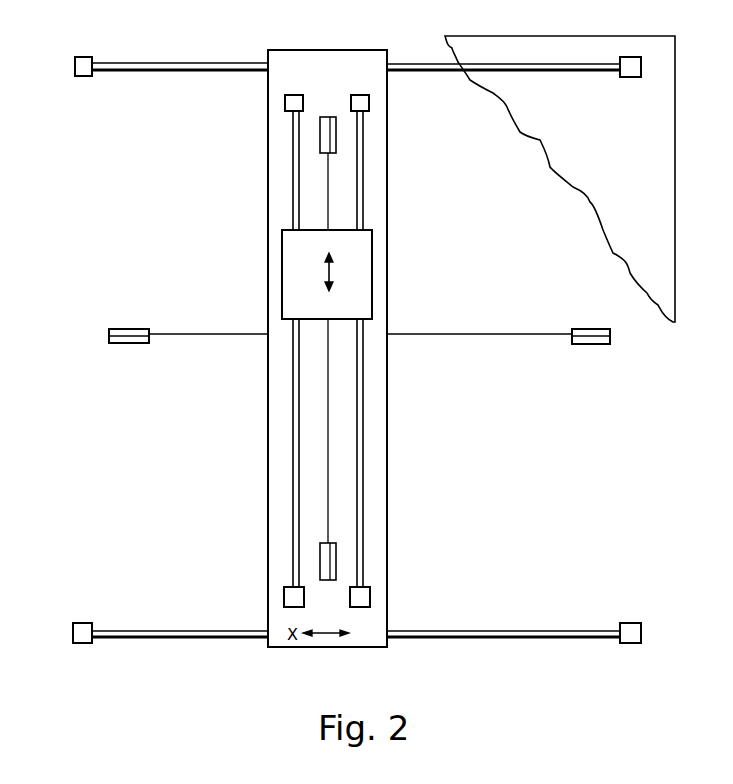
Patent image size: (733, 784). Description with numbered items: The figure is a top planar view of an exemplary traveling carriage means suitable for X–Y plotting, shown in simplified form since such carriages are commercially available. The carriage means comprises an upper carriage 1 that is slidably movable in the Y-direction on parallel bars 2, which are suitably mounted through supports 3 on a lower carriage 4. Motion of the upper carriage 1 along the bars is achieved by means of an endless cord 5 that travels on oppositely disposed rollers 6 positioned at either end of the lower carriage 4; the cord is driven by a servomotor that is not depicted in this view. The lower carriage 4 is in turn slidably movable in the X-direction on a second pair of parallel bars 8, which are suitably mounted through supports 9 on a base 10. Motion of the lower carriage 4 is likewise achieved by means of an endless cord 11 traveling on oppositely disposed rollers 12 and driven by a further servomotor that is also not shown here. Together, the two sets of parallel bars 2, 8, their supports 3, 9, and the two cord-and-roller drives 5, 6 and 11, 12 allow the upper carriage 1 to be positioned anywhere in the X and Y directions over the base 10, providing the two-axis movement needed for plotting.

The upper carriage 1 is at (360, 292).
The parallel bars 2 is at (361, 216).
The supports 3 is at (363, 103).
The lower carriage 4 is at (380, 168).
The endless cord 5 is at (325, 192).
The rollers 6 is at (320, 130).
The parallel bars 8 is at (173, 66).
The supports 9 is at (81, 74).
The base 10 is at (668, 138).
The endless cord 11 is at (163, 334).
The rollers 12 is at (133, 330).